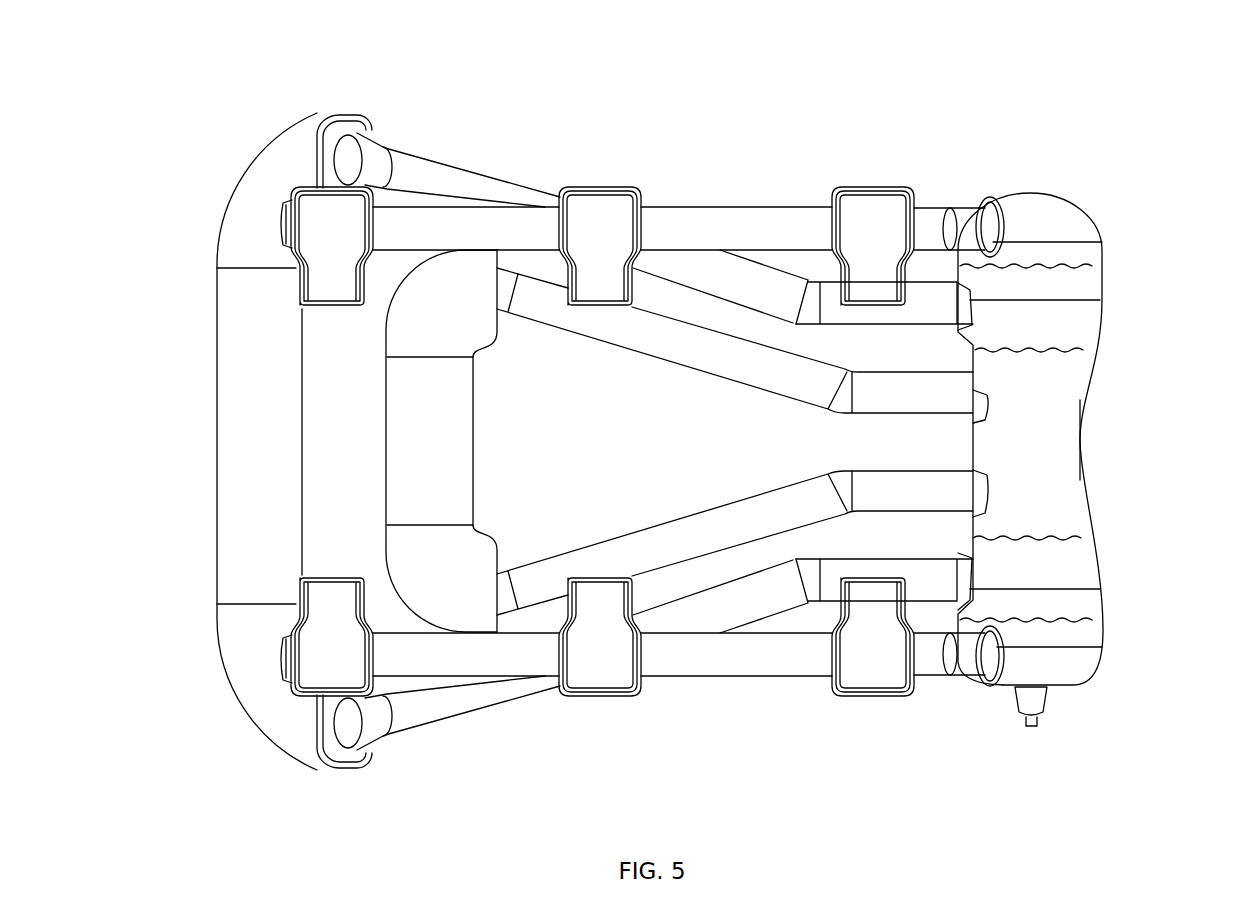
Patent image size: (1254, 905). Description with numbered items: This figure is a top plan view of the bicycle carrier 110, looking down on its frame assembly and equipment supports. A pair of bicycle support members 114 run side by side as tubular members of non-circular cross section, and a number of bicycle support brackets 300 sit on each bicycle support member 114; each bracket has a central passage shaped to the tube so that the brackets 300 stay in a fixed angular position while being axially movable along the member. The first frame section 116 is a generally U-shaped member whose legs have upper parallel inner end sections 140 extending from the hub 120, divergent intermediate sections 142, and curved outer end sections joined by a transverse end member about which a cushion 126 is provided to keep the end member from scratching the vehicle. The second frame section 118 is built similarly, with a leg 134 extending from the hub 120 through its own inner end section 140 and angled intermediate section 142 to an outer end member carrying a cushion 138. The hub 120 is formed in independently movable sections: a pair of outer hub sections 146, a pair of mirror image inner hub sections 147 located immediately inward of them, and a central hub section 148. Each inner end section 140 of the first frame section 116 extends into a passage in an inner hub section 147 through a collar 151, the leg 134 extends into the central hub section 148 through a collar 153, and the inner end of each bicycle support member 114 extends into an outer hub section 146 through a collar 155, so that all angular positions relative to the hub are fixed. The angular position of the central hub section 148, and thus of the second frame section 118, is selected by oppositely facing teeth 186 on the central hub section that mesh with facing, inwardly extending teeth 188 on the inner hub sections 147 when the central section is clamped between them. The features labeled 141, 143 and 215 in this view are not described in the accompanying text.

The bicycle carrier 110 is at (732, 116).
The bicycle support member 114 is at (787, 203).
The first frame section 116 is at (170, 492).
The second frame section 118 is at (506, 462).
The hub 120 is at (1103, 458).
The cushion 126 is at (225, 375).
The leg 134 is at (746, 487).
The cushion 138 is at (395, 465).
The inner end section 140 is at (940, 338).
The upper band 141 is at (1057, 262).
The intermediate section 142 is at (519, 186).
The serrated edge 143 is at (1068, 280).
The outer hub section 146 is at (1055, 205).
The inner hub section 147 is at (1090, 325).
The central hub section 148 is at (1070, 418).
The collar 151 is at (962, 280).
The collar 153 is at (987, 420).
The collar 155 is at (996, 197).
The teeth 186 is at (1068, 537).
The teeth 188 is at (1070, 347).
The bracket 215 is at (1020, 705).
The bicycle support bracket 300 is at (599, 182).